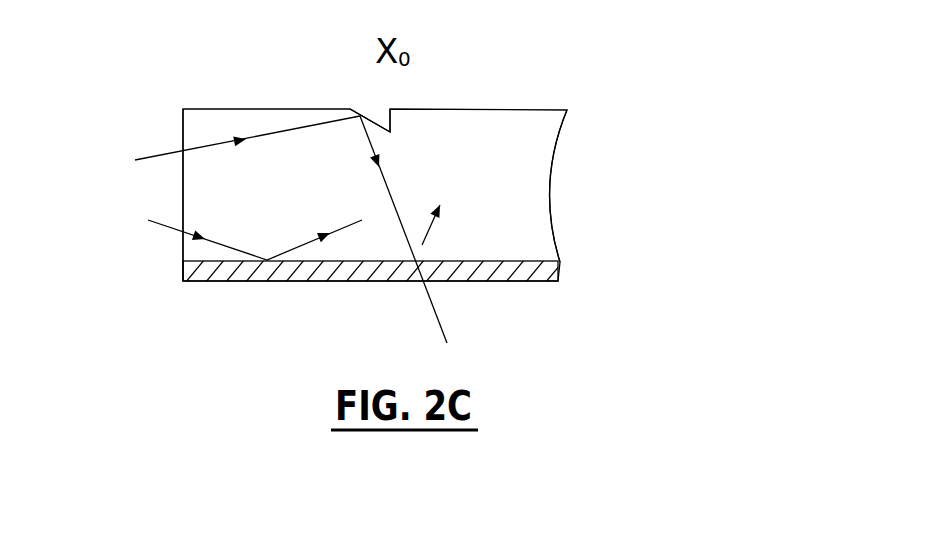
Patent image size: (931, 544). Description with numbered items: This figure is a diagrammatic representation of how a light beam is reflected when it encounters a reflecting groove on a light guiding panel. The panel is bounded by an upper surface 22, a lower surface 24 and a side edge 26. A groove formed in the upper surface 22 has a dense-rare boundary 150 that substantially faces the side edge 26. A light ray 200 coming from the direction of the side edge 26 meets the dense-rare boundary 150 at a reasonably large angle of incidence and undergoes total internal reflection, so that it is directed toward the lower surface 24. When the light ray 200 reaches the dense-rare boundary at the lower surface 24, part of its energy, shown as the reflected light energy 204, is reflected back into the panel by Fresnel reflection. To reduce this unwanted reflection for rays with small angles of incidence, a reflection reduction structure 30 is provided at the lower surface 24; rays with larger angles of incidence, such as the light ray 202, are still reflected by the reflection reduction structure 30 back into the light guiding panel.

The upper surface 22 is at (589, 118).
The lower surface 24 is at (592, 238).
The side edge 26 is at (183, 249).
The reflection reduction structure 30 is at (560, 272).
The dense-rare boundary 150 is at (353, 112).
The light ray 200 is at (163, 153).
The light ray 202 is at (422, 245).
The reflected light energy 204 is at (303, 245).